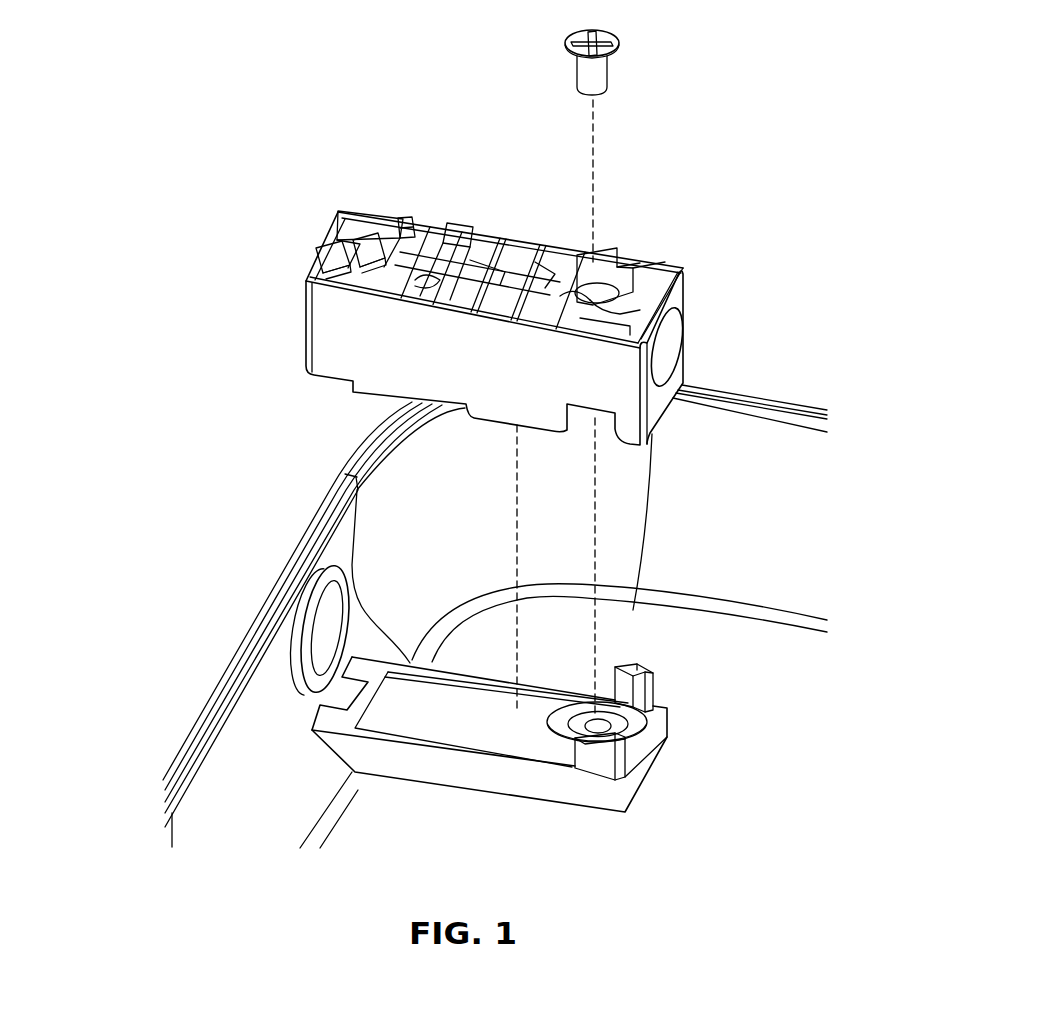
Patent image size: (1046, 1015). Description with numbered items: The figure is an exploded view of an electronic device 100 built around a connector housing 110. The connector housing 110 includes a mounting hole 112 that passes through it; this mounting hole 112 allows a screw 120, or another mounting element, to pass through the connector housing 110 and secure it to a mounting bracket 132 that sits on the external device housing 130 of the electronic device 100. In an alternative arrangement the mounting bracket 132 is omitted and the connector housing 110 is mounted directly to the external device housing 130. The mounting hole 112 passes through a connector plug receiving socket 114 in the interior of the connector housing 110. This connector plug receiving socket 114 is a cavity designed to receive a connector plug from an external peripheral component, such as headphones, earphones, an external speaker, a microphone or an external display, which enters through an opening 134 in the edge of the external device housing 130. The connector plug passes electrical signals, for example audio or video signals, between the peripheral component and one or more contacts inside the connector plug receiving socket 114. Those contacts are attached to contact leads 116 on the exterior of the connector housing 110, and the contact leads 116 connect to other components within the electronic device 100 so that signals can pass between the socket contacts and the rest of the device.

The electronic device 100 is at (215, 163).
The connector housing 110 is at (303, 338).
The mounting hole 112 is at (628, 282).
The connector plug receiving socket 114 is at (673, 340).
The contact leads 116 is at (408, 216).
The screw 120 is at (618, 42).
The external device housing 130 is at (222, 677).
The mounting bracket 132 is at (663, 730).
The opening 134 is at (343, 599).